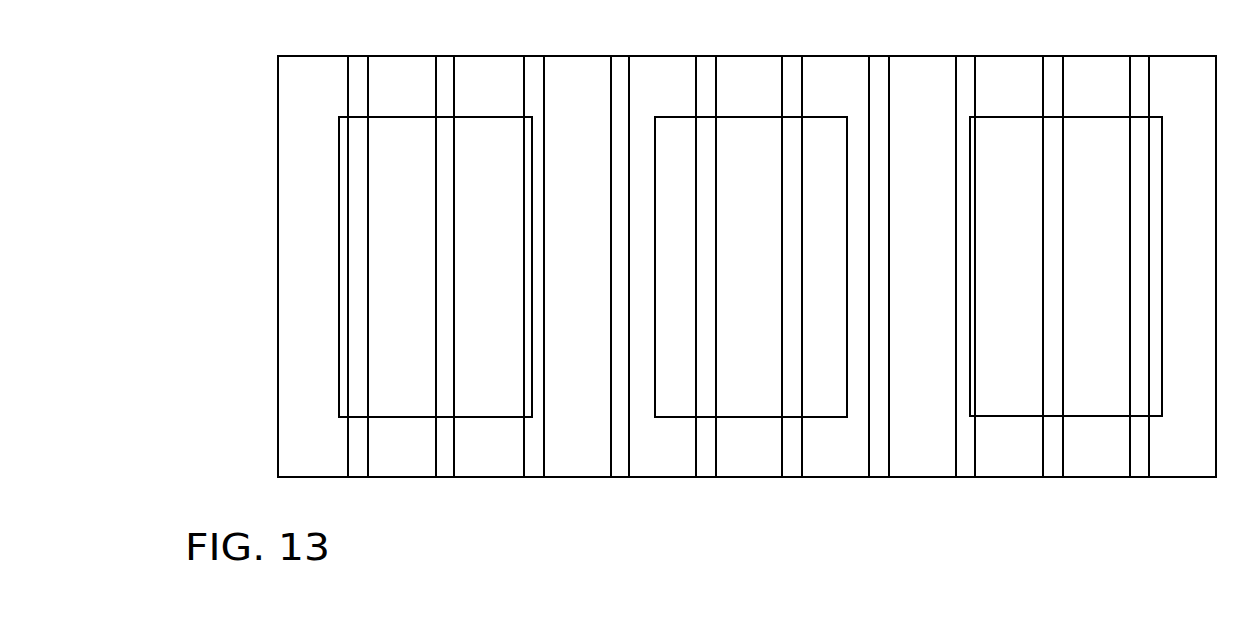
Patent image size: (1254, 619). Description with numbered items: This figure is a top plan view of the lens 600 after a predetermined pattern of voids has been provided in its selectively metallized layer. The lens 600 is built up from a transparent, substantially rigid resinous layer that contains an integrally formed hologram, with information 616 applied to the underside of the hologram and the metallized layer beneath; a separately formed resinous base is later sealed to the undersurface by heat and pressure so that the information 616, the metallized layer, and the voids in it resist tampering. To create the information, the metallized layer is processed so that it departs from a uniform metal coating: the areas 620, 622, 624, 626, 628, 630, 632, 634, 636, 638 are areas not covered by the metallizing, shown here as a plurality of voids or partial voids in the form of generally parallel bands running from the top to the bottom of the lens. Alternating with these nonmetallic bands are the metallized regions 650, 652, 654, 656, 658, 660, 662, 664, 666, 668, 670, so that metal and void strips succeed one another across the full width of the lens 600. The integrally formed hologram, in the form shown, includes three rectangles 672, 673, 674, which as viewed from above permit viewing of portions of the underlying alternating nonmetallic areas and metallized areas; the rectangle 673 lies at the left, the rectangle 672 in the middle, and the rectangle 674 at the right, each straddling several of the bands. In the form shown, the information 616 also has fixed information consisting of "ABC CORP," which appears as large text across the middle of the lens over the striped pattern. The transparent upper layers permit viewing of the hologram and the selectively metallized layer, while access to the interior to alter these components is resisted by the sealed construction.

The lens 600 is at (271, 145).
The information 616 is at (408, 258).
The nonmetallic area 620 is at (355, 470).
The nonmetallic area 622 is at (446, 472).
The nonmetallic area 624 is at (536, 472).
The nonmetallic area 626 is at (620, 467).
The nonmetallic area 628 is at (707, 467).
The nonmetallic area 630 is at (793, 467).
The nonmetallic area 632 is at (877, 467).
The nonmetallic area 634 is at (967, 466).
The nonmetallic area 636 is at (1054, 467).
The nonmetallic area 638 is at (1143, 468).
The metallized region 650 is at (321, 75).
The metallized region 652 is at (414, 75).
The metallized region 654 is at (499, 75).
The metallized region 656 is at (583, 75).
The metallized region 658 is at (673, 75).
The metallized region 660 is at (758, 75).
The metallized region 662 is at (840, 75).
The metallized region 664 is at (915, 75).
The metallized region 666 is at (1010, 75).
The metallized region 668 is at (1093, 75).
The metallized region 670 is at (1167, 75).
The rectangle 672 is at (675, 393).
The rectangle 673 is at (380, 376).
The rectangle 674 is at (1003, 388).